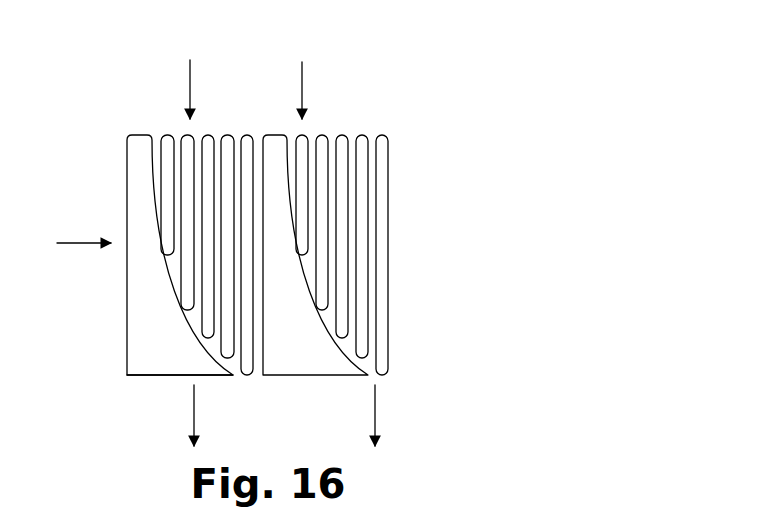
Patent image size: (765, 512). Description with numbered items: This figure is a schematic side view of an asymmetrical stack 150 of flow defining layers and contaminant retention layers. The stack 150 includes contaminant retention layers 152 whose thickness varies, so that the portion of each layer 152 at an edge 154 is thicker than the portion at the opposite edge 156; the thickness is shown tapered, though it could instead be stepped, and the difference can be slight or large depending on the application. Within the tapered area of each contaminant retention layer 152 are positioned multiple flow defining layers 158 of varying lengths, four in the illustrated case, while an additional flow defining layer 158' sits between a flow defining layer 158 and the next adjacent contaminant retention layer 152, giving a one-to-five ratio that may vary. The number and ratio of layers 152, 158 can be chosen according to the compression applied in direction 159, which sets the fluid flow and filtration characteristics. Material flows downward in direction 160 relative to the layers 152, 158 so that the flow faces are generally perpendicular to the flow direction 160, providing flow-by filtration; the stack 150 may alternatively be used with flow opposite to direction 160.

The stack 150 is at (404, 157).
The contaminant retention layer 152 is at (140, 135).
The edge 154 is at (153, 375).
The opposite edge 156 is at (146, 135).
The flow defining layer 158 is at (199, 209).
The flow defining layer 158' is at (257, 227).
The compression direction 159 is at (75, 243).
The material flow direction 160 is at (189, 73).